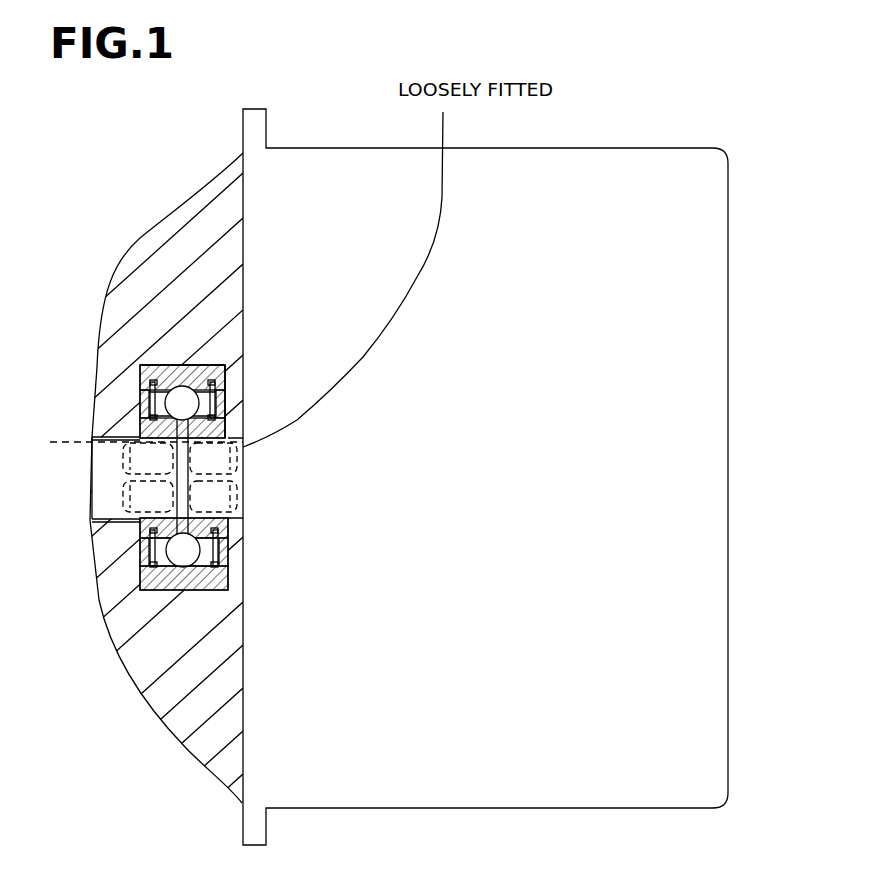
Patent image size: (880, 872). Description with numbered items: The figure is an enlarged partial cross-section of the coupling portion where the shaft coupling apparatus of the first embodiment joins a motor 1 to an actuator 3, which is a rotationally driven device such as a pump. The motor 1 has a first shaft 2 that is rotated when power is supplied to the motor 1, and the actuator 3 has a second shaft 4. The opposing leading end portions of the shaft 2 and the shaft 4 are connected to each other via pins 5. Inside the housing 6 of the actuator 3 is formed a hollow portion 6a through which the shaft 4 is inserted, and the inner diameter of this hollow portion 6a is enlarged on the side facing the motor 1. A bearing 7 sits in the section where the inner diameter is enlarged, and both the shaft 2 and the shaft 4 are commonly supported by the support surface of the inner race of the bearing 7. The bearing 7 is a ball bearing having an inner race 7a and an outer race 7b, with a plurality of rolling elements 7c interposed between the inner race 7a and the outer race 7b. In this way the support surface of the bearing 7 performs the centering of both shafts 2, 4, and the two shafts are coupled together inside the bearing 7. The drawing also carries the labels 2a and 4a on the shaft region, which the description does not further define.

The motor 1 is at (728, 470).
The shaft 2 is at (233, 360).
The fitting hole 2a is at (203, 363).
The actuator 3 is at (142, 687).
The shaft 4 is at (117, 480).
The gear reference line 4a is at (129, 442).
The pins 5 is at (143, 367).
The housing 6 is at (97, 372).
The hollow portion 6a is at (127, 433).
The bearing 7 is at (163, 367).
The inner race 7a is at (150, 535).
The outer race 7b is at (160, 603).
The rolling elements 7c is at (166, 550).